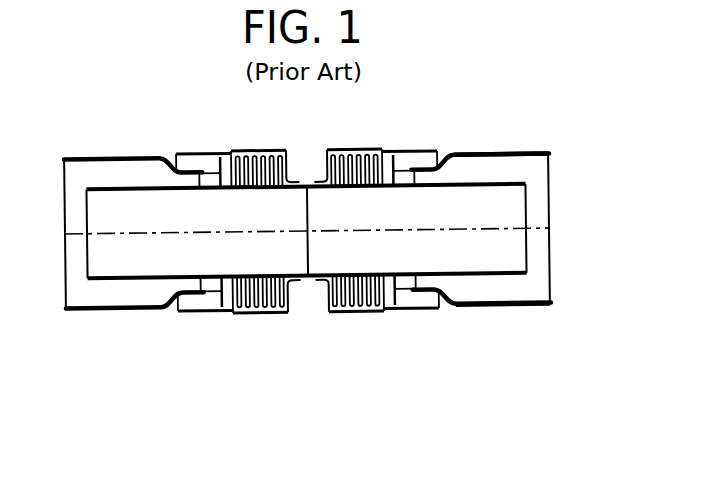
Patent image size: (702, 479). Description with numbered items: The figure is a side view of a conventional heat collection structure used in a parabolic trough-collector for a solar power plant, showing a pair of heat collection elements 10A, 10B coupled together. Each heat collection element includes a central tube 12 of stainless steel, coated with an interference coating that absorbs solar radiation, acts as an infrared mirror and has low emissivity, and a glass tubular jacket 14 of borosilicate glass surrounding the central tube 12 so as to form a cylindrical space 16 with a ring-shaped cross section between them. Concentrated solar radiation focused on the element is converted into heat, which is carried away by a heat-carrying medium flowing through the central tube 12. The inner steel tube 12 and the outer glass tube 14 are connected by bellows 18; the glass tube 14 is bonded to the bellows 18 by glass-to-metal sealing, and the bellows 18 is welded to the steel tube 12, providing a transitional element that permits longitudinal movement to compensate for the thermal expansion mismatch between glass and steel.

The heat collection element 10A is at (154, 112).
The heat collection element 10B is at (472, 115).
The central tube 12 is at (508, 182).
The glass tubular jacket 14 is at (505, 152).
The cylindrical space 16 is at (495, 287).
The bellows 18 is at (257, 303).